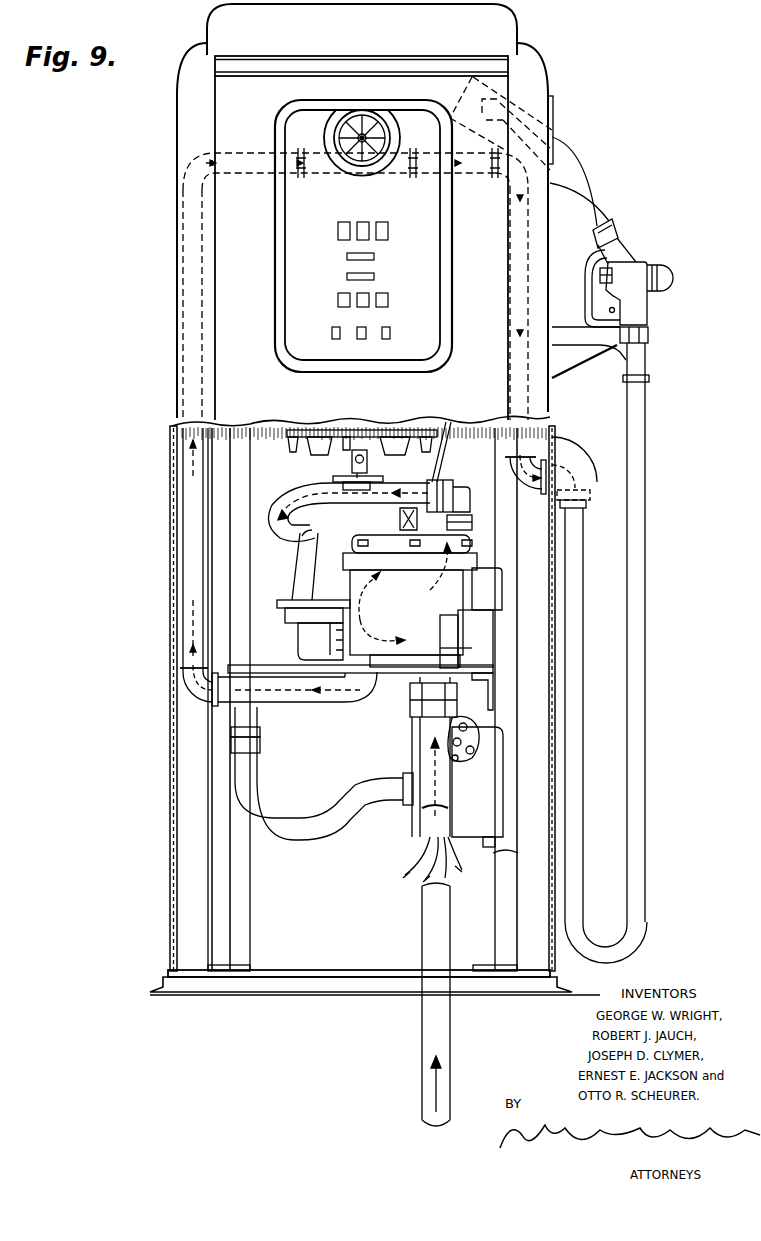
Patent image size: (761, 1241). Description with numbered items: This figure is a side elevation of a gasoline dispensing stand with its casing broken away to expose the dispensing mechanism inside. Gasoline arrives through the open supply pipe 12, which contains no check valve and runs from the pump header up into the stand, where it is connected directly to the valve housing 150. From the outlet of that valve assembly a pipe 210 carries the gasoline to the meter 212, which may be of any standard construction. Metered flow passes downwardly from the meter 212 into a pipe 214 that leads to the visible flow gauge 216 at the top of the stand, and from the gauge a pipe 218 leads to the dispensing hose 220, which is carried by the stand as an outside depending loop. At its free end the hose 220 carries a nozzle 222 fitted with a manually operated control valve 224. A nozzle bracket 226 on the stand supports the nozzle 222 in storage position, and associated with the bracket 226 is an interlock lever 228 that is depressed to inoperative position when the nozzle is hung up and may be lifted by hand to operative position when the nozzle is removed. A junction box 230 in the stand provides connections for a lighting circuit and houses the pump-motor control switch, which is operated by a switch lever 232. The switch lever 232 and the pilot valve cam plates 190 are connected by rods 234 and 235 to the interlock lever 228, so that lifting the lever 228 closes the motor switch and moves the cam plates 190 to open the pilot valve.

The supply pipe 12 is at (428, 745).
The valve housing 150 is at (422, 601).
The pilot valve cam plates 190 is at (400, 517).
The pipe 210 is at (313, 502).
The meter 212 is at (322, 577).
The pipe 214 is at (313, 694).
The visible flow gauge 216 is at (366, 152).
The pipe 218 is at (528, 430).
The dispensing hose 220 is at (575, 627).
The nozzle 222 is at (623, 258).
The control valve 224 is at (666, 280).
The nozzle bracket 226 is at (582, 360).
The interlock lever 228 is at (559, 330).
The junction box 230 is at (460, 804).
The switch lever 232 is at (480, 746).
The rod 234 is at (470, 648).
The rod 235 is at (441, 451).